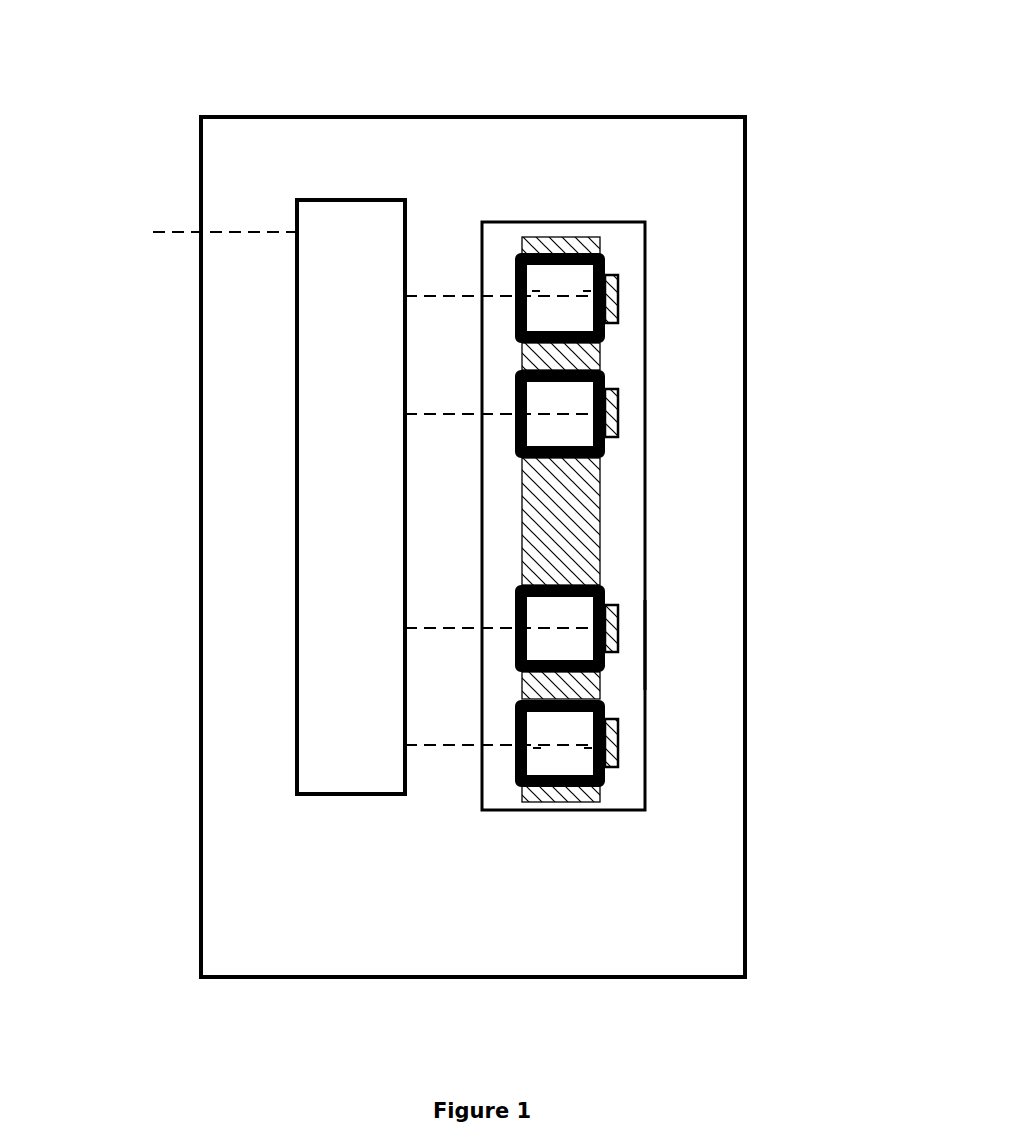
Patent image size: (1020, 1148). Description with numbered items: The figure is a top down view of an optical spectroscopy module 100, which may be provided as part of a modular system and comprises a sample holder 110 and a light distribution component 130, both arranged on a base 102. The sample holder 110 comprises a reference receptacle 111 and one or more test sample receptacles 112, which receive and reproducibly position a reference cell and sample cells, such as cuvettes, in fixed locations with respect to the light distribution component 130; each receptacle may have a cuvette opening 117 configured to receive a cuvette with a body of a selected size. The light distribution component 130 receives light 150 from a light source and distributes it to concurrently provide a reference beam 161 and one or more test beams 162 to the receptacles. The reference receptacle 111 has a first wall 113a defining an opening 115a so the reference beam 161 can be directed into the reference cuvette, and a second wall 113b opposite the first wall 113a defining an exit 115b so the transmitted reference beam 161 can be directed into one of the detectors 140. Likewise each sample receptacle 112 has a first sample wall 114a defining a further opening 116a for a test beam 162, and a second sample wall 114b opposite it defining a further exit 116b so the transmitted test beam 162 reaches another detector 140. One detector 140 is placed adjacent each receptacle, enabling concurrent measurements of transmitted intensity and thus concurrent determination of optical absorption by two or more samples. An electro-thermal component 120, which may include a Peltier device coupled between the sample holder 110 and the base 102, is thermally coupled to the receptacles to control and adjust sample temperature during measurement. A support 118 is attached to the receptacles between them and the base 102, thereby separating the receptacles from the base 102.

The optical spectroscopy module 100 is at (183, 78).
The base 102 is at (197, 192).
The sample holder 110 is at (672, 558).
The reference receptacle 111 is at (593, 246).
The test sample receptacle 112 is at (600, 463).
The first wall 113a is at (517, 270).
The second wall 113b is at (605, 268).
The first sample wall 114a is at (517, 772).
The second sample wall 114b is at (605, 773).
The opening 115a is at (532, 291).
The exit 115b is at (591, 291).
The further opening 116a is at (533, 748).
The further exit 116b is at (592, 748).
The cuvette opening 117 is at (575, 320).
The support 118 is at (650, 643).
The electro-thermal component 120 is at (606, 687).
The light distribution component 130 is at (293, 443).
The detector 140 is at (618, 327).
The light 150 is at (180, 238).
The reference beam 161 is at (443, 294).
The test beam 162 is at (437, 420).